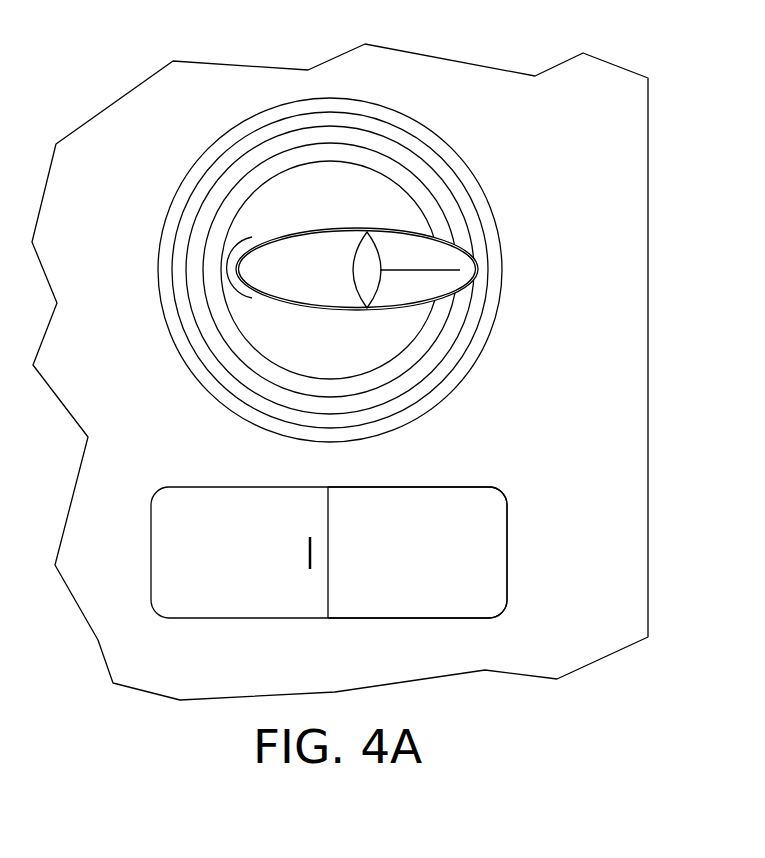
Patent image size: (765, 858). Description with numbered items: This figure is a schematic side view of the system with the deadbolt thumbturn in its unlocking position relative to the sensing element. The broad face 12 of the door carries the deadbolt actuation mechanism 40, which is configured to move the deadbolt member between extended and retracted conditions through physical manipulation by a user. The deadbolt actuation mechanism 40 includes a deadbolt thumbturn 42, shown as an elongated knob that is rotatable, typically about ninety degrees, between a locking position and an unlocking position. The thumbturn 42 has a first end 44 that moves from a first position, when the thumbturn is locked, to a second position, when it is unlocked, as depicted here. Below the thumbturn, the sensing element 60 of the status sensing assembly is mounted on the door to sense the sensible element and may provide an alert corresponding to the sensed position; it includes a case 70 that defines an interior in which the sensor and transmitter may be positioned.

The broad face 12 is at (512, 118).
The deadbolt actuation mechanism 40 is at (223, 121).
The deadbolt thumbturn 42 is at (335, 263).
The first end 44 is at (527, 217).
The sensing element 60 is at (187, 707).
The case 70 is at (457, 688).